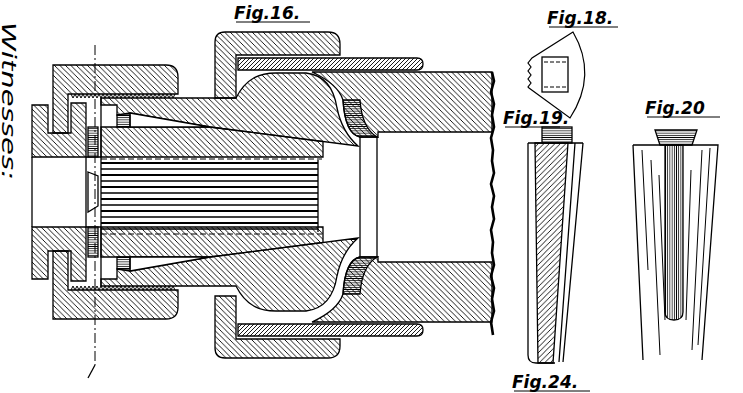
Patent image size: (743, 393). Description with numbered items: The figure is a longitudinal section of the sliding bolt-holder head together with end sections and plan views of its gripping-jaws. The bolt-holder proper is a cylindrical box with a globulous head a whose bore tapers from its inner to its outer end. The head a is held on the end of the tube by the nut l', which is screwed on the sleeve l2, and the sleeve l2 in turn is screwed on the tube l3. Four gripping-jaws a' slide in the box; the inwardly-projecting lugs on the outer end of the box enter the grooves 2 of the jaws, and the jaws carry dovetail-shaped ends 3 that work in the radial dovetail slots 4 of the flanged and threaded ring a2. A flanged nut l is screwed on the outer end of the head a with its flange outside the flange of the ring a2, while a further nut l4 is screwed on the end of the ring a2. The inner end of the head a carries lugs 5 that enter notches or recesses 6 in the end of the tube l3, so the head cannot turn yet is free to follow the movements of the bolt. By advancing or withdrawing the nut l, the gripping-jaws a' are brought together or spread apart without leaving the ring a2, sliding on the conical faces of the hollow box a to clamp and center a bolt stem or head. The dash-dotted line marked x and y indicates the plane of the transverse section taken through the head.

In FIG. 16, the flanged nut l is at (115, 183).
In FIG. 16, the nut l' is at (277, 197).
In FIG. 16, the sleeve l2 is at (383, 56).
In FIG. 16, the tube l3 is at (403, 203).
In FIG. 16, the nut l4 is at (50, 100).
In FIG. 16, the globulous head a is at (212, 192).
In FIG. 16, the gripping-jaws a' is at (229, 192).
In FIG. 18, the gripping-jaws a' is at (565, 75).
In FIG. 19, the gripping-jaws a' is at (562, 253).
In FIG. 20, the gripping-jaws a' is at (675, 252).
In FIG. 16, the flanged and threaded ring a2 is at (32, 238).
In FIG. 18, the grooves 2 is at (581, 77).
In FIG. 19, the grooves 2 is at (573, 174).
In FIG. 20, the grooves 2 is at (674, 232).
In FIG. 18, the dovetail-shaped ends 3 is at (555, 74).
In FIG. 19, the dovetail-shaped ends 3 is at (563, 135).
In FIG. 20, the dovetail-shaped ends 3 is at (668, 137).
In FIG. 16, the radial dovetail slots 4 is at (163, 192).
In FIG. 16, the lugs 5 is at (368, 197).
In FIG. 16, the notches or recesses 6 is at (376, 134).
In FIG. 16, the section line x x is at (93, 197).
In FIG. 16, the section line y is at (90, 378).